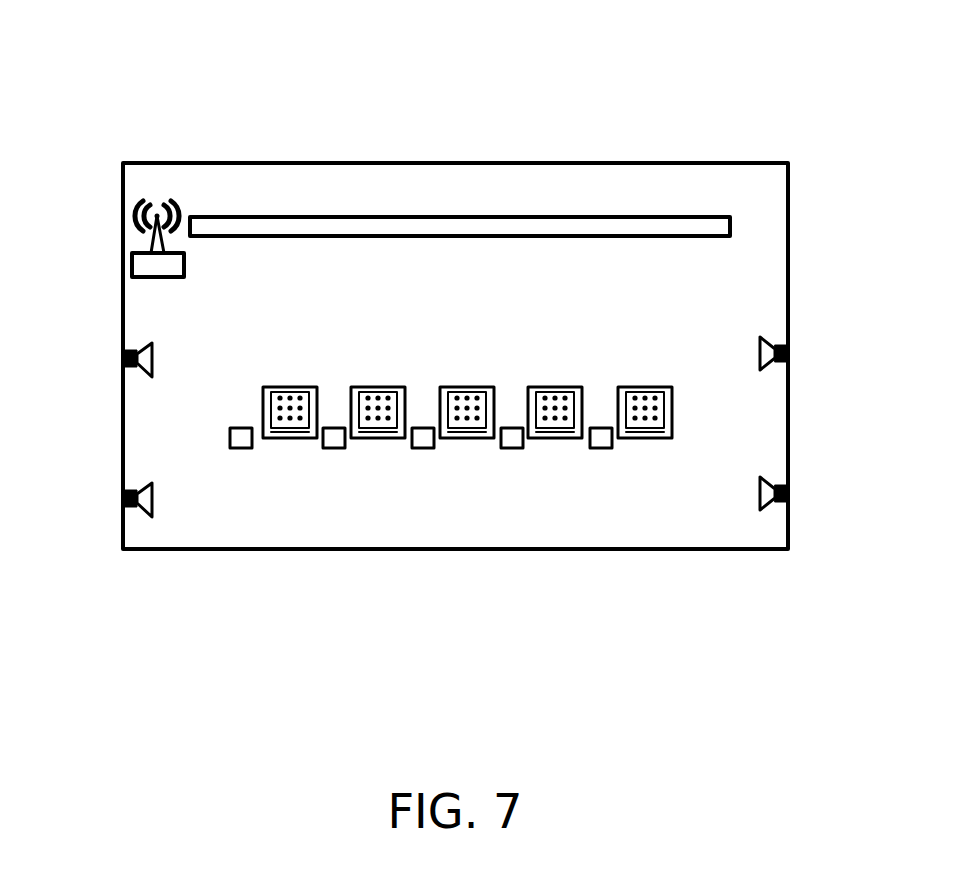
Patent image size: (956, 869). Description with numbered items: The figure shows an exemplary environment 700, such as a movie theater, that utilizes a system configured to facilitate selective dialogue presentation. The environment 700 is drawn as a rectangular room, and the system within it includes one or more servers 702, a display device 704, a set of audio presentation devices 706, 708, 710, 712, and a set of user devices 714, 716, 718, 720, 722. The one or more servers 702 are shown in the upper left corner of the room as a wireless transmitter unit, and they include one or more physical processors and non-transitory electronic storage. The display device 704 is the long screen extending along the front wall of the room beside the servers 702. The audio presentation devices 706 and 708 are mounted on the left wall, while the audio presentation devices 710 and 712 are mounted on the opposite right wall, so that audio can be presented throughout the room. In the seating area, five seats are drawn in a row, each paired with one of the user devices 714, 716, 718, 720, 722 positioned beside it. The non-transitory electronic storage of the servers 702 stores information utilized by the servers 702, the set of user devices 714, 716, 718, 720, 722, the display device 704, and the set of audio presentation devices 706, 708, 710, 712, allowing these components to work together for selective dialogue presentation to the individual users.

The environment 700 is at (340, 101).
The servers 702 is at (131, 255).
The display device 704 is at (566, 218).
The audio presentation device 706 is at (123, 350).
The audio presentation device 708 is at (123, 492).
The audio presentation device 710 is at (772, 360).
The audio presentation device 712 is at (772, 502).
The user device 714 is at (232, 450).
The user device 716 is at (325, 450).
The user device 718 is at (414, 450).
The user device 720 is at (503, 450).
The user device 722 is at (592, 450).